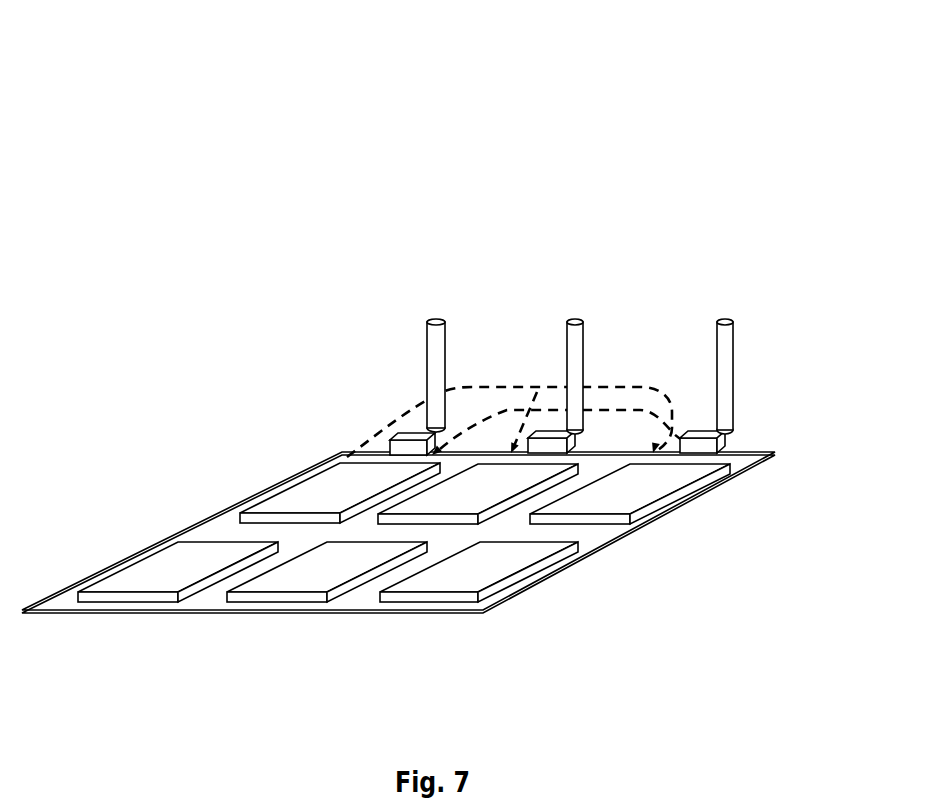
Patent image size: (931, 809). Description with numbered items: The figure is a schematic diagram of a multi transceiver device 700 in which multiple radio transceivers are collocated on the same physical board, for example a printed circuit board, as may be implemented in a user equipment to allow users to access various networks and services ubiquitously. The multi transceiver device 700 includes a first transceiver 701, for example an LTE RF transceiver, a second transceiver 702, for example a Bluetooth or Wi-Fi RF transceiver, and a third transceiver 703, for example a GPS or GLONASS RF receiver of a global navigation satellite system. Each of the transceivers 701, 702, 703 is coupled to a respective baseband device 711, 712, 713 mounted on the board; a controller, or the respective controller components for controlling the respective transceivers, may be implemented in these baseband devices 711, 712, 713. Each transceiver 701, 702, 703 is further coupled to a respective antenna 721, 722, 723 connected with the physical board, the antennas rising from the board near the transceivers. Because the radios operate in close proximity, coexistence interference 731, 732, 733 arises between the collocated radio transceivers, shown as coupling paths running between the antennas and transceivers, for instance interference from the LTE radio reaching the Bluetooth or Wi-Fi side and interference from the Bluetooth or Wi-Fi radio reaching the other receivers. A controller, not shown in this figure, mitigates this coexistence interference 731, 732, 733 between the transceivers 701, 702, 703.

The multi transceiver device 700 is at (302, 110).
The first transceiver 701 is at (296, 499).
The second transceiver 702 is at (697, 487).
The third transceiver 703 is at (581, 466).
The baseband device 711 is at (128, 580).
The baseband device 712 is at (538, 568).
The baseband device 713 is at (263, 601).
The antenna 721 is at (435, 296).
The antenna 722 is at (721, 295).
The antenna 723 is at (570, 295).
The coexistence interference 731 is at (640, 407).
The coexistence interference 732 is at (609, 373).
The coexistence interference 733 is at (516, 432).